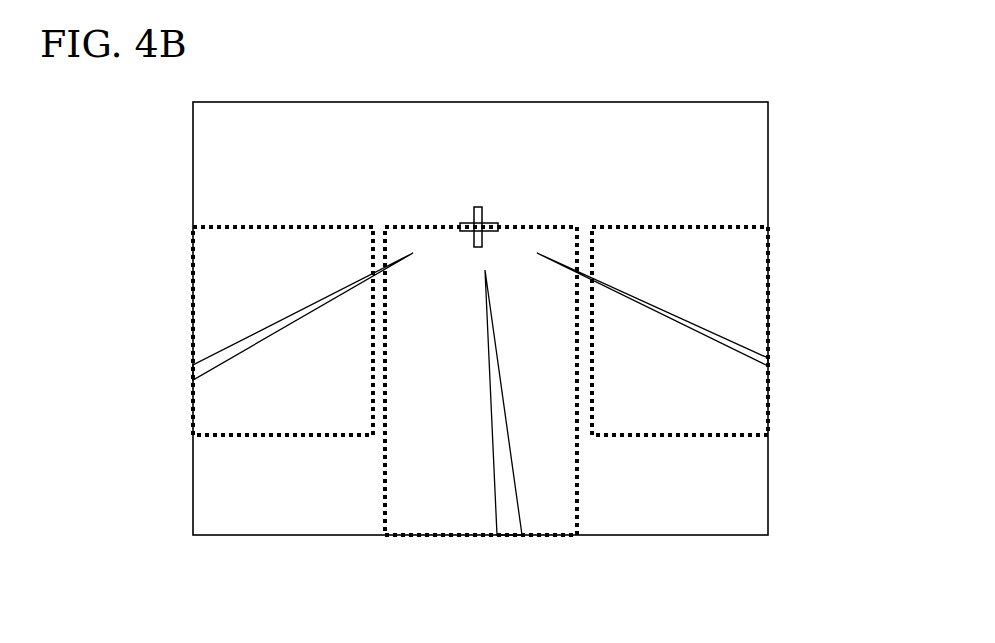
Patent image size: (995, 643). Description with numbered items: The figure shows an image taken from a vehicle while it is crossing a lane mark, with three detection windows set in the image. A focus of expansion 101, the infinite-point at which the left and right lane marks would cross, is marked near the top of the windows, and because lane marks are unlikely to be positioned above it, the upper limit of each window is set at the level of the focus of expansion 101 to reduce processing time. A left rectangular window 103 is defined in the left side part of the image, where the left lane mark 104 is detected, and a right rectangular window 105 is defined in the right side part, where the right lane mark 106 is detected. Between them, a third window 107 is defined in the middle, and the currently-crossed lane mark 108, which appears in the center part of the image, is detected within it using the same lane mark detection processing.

The focus of expansion 101 is at (481, 212).
The left rectangular window 103 is at (190, 408).
The left lane mark 104 is at (256, 331).
The right rectangular window 105 is at (770, 406).
The right lane mark 106 is at (683, 316).
The third window 107 is at (577, 488).
The currently-crossed lane mark 108 is at (495, 457).